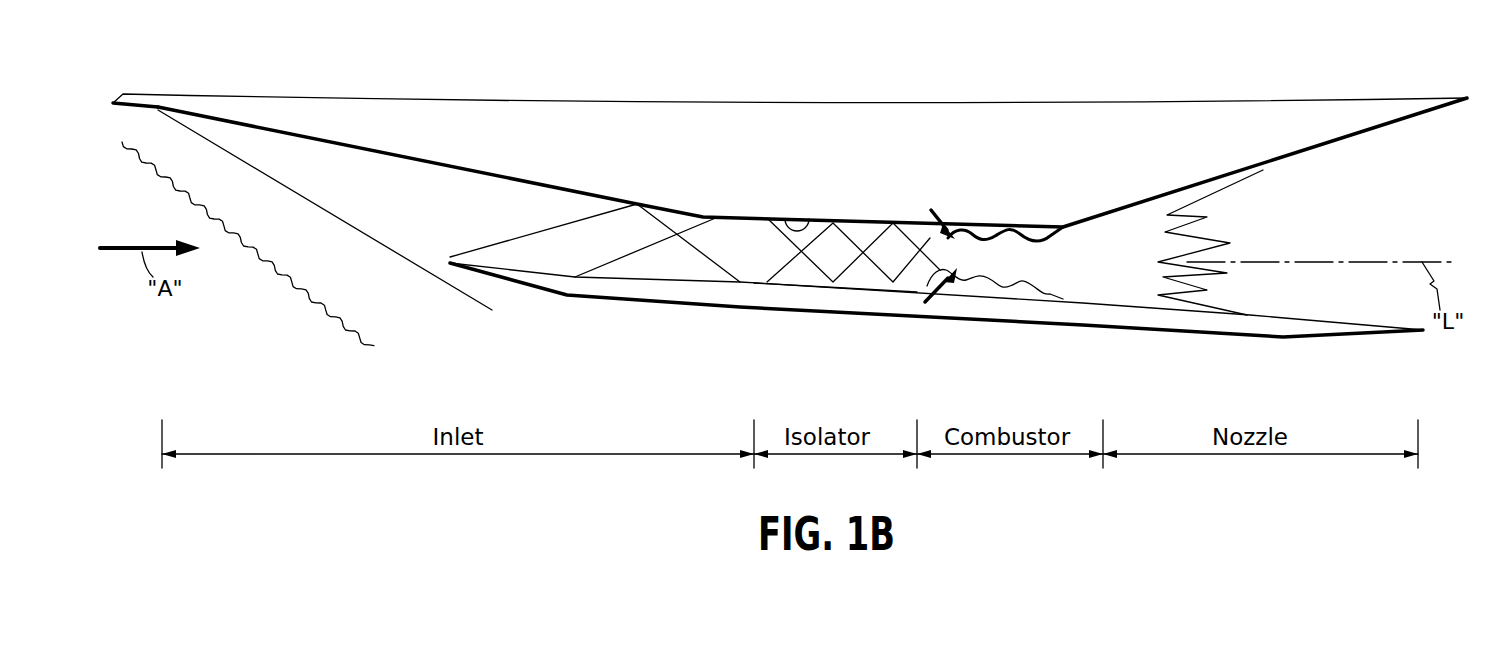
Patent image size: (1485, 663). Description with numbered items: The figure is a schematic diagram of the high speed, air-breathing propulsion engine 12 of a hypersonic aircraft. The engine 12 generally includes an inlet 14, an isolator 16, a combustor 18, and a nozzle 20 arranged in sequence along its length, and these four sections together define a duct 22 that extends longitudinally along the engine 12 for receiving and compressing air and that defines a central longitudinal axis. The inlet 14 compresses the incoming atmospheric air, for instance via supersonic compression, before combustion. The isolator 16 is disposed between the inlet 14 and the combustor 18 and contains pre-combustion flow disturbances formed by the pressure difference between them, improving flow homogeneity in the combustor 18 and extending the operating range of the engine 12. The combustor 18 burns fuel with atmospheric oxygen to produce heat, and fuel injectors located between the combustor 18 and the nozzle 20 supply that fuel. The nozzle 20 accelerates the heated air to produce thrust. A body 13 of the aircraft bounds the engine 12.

The propulsion engine 12 is at (345, 66).
The body 13 is at (785, 217).
The inlet 14 is at (452, 264).
The isolator 16 is at (855, 288).
The combustor 18 is at (1000, 286).
The nozzle 20 is at (1197, 300).
The duct 22 is at (972, 253).